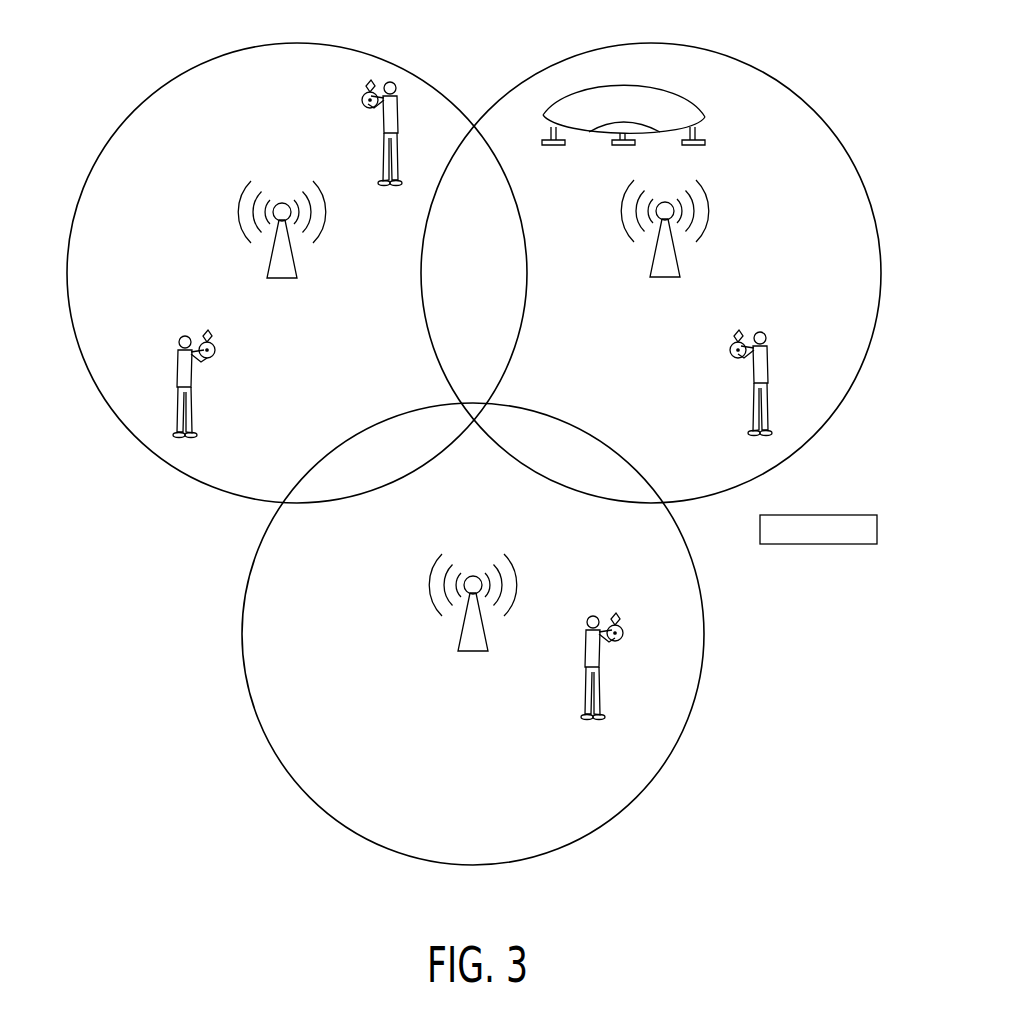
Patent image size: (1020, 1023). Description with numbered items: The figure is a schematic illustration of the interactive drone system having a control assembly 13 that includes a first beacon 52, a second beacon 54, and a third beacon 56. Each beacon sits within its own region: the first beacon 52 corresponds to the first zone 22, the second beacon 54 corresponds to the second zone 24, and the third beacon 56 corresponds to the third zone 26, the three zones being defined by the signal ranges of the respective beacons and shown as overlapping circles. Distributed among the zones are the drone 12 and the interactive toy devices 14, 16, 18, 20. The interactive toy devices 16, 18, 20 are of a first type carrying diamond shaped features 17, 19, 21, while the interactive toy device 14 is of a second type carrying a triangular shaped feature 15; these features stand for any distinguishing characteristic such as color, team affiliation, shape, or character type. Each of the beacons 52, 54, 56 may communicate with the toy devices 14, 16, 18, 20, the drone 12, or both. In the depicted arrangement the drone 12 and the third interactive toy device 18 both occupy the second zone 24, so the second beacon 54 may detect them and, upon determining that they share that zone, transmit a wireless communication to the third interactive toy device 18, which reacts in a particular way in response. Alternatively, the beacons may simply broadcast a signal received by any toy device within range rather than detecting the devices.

The drone 12 is at (660, 90).
The control assembly 13 is at (818, 515).
The interactive toy device 14 is at (218, 348).
The triangular shaped feature 15 is at (207, 340).
The interactive toy device 16 is at (355, 98).
The diamond shaped feature 17 is at (364, 93).
The third interactive toy device 18 is at (729, 345).
The diamond shaped feature 19 is at (740, 330).
The interactive toy device 20 is at (630, 631).
The diamond shaped feature 21 is at (617, 612).
The first zone 22 is at (292, 43).
The second zone 24 is at (648, 43).
The third zone 26 is at (634, 790).
The first beacon 52 is at (305, 260).
The second beacon 54 is at (688, 261).
The third beacon 56 is at (496, 634).